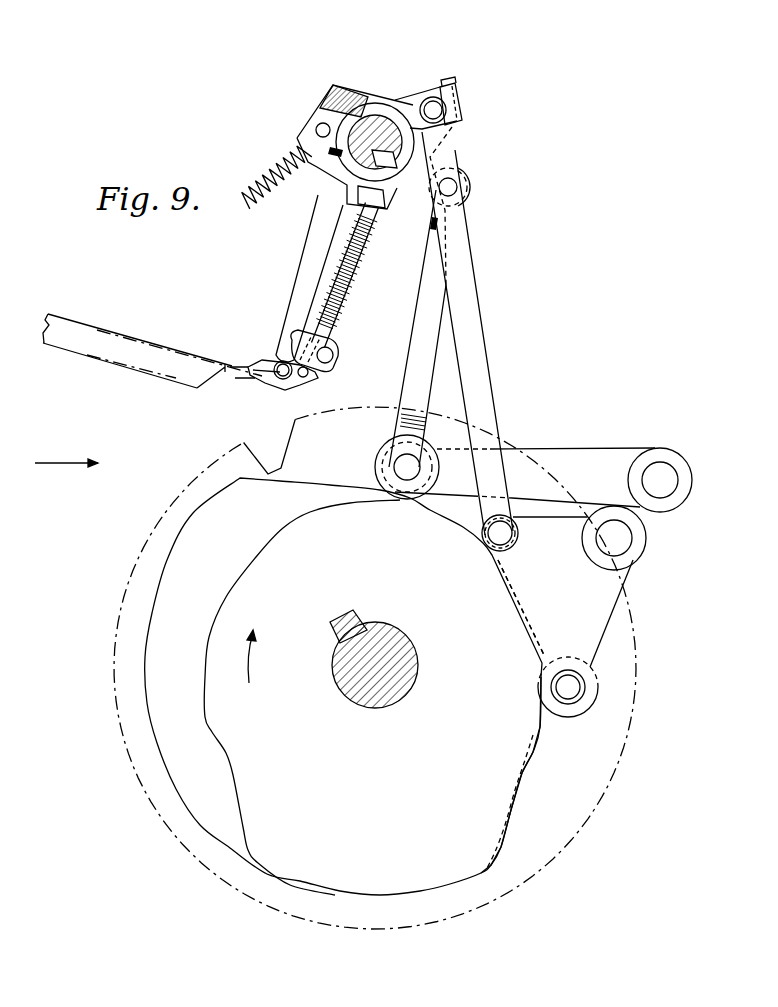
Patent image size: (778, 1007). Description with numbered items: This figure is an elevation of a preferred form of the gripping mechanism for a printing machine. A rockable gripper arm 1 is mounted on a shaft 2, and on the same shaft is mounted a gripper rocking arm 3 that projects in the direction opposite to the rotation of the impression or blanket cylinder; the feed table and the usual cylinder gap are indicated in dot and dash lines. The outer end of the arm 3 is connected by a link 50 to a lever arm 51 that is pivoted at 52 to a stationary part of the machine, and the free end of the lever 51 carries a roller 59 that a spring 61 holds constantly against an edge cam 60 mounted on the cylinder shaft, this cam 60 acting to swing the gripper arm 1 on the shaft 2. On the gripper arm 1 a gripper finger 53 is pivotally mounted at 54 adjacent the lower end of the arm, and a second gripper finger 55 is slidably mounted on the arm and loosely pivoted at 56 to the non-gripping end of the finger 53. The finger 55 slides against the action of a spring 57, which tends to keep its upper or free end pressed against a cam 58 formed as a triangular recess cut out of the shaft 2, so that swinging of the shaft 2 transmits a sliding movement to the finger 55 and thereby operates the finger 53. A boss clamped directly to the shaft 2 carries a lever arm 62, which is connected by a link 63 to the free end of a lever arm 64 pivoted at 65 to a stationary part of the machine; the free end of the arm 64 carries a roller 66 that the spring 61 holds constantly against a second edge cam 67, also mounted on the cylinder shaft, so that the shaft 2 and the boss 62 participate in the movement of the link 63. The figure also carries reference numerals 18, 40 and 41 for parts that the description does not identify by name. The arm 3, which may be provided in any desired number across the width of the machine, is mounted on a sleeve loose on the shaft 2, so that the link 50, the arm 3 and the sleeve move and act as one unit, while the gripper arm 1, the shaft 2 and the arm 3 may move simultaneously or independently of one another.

The rockable gripper arm 1 is at (313, 262).
The shaft 2 is at (383, 128).
The gripper rocking arm 3 is at (420, 185).
The cam shaft 18 is at (365, 662).
The clevis eye 40 is at (342, 352).
The threaded rod 41 is at (347, 287).
The link 50 is at (430, 322).
The lever arm 51 is at (595, 470).
The pivot 52 is at (657, 480).
The gripper finger 53 is at (272, 362).
The pivot 54 is at (286, 373).
The gripper finger 55 is at (245, 383).
The pivotal connection 56 is at (308, 374).
The spring 57 is at (357, 256).
The cam 58 is at (390, 127).
The roller 59 is at (382, 455).
The edge cam 60 is at (345, 686).
The spring 61 is at (278, 178).
The lever arm 62 is at (465, 104).
The link 63 is at (460, 253).
The lever arm 64 is at (557, 591).
The pivot 65 is at (622, 540).
The roller 66 is at (599, 689).
The edge cam 67 is at (514, 797).